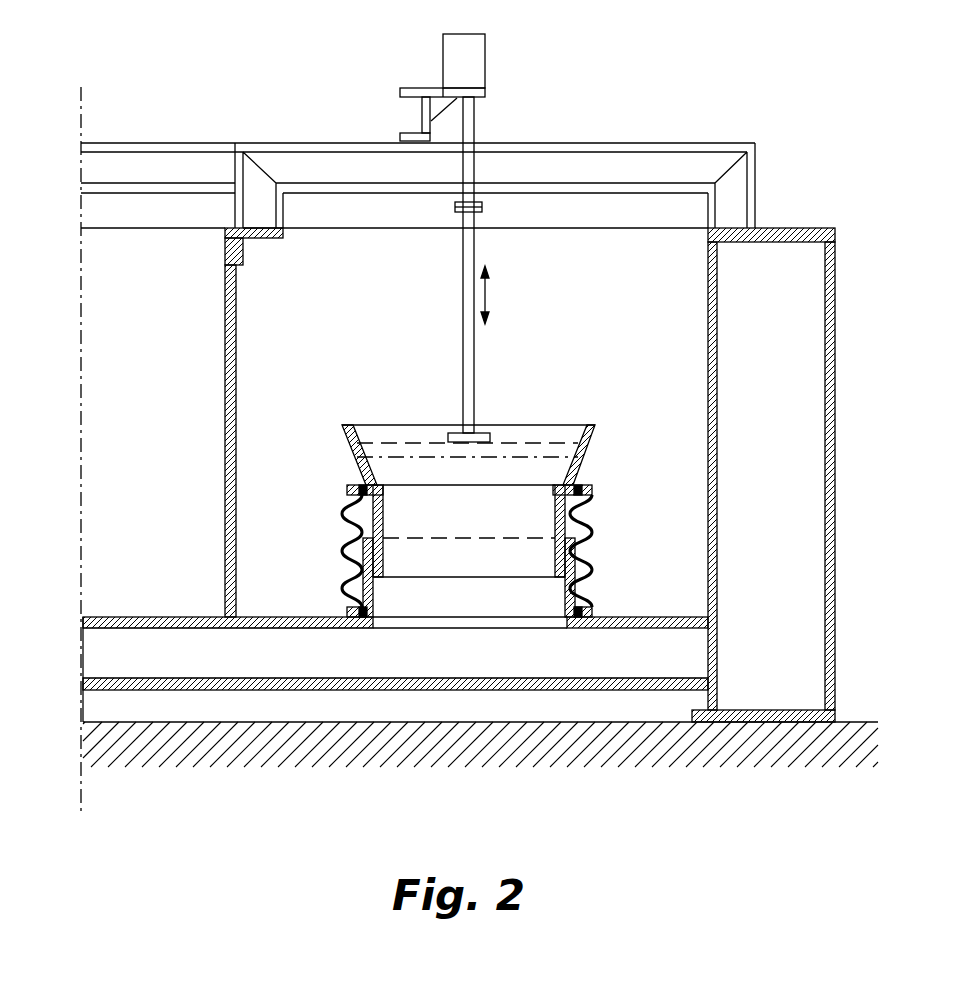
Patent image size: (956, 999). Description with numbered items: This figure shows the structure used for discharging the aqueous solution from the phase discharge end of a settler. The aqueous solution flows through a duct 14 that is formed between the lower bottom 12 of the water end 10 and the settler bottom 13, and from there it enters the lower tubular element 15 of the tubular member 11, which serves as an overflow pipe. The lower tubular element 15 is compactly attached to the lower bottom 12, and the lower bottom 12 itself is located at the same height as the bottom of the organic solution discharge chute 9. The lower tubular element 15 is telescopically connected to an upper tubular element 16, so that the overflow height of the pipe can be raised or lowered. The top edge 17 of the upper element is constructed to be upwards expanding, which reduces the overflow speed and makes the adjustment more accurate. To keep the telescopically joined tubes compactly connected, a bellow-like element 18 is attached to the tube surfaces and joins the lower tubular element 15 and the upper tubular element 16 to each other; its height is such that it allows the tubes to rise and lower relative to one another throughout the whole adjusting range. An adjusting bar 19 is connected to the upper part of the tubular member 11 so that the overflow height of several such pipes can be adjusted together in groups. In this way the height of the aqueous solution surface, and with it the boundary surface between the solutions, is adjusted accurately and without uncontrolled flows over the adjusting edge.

The organic solution discharge chute 9 is at (118, 245).
The water end 10 is at (642, 243).
The tubular member 11 is at (582, 402).
The lower bottom 12 is at (290, 628).
The settler bottom 13 is at (390, 690).
The duct 14 is at (227, 667).
The lower tubular element 15 is at (370, 603).
The upper tubular element 16 is at (380, 512).
The top edge 17 is at (355, 453).
The bellow-like element 18 is at (350, 550).
The adjusting bar 19 is at (468, 172).